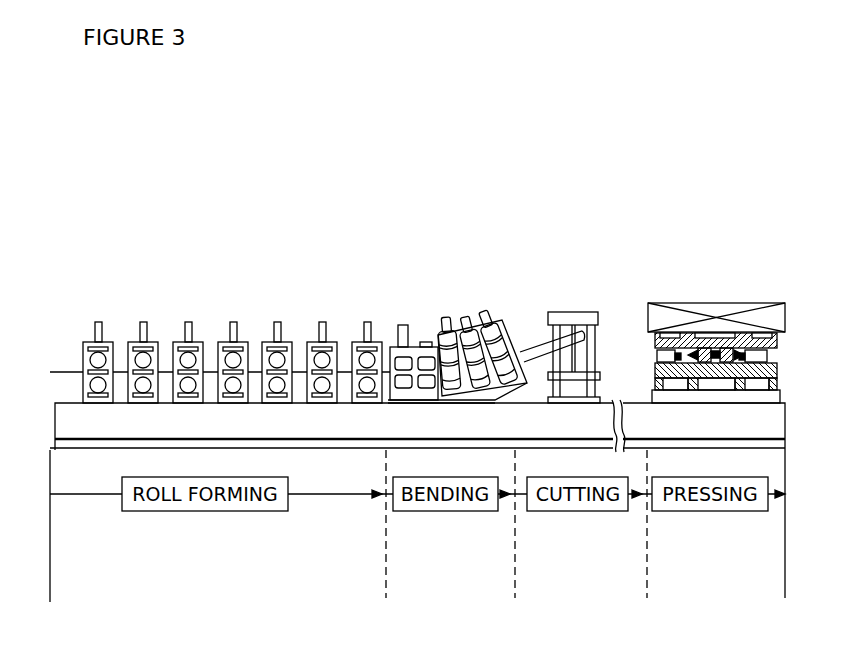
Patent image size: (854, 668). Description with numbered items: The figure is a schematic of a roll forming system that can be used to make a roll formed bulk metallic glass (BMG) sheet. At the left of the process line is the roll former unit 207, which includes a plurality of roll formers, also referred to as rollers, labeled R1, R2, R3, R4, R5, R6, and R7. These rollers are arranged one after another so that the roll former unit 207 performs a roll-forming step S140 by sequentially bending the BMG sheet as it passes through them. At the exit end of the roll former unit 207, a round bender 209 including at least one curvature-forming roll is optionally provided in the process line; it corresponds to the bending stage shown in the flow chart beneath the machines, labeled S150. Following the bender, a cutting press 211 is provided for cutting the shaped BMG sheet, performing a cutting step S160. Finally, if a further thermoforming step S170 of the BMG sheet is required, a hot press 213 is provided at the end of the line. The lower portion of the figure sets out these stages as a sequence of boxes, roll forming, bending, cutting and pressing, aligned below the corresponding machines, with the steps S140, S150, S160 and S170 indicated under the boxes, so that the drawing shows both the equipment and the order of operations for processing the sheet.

The roll former unit 207 is at (228, 247).
The roll former R1 is at (98, 321).
The roll former R2 is at (143, 321).
The roll former R3 is at (188, 321).
The roll former R4 is at (233, 321).
The roll former R5 is at (277, 321).
The roll former R6 is at (322, 321).
The roll former R7 is at (367, 321).
The round bender 209 is at (455, 297).
The cutting press 211 is at (574, 300).
The hot press 213 is at (718, 290).
The roll-forming step S140 is at (200, 511).
The bending step S150 is at (445, 511).
The cutting step S160 is at (578, 511).
The thermoforming step S170 is at (712, 511).